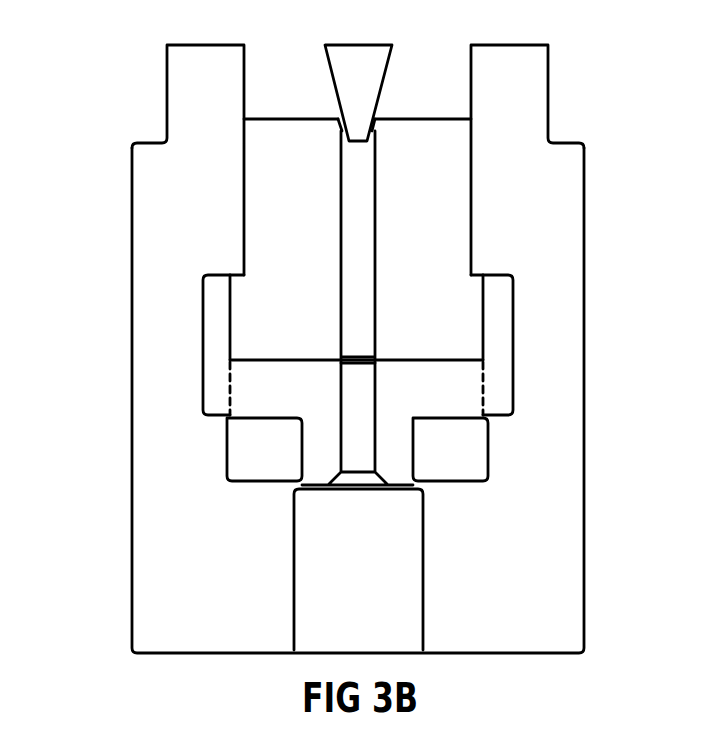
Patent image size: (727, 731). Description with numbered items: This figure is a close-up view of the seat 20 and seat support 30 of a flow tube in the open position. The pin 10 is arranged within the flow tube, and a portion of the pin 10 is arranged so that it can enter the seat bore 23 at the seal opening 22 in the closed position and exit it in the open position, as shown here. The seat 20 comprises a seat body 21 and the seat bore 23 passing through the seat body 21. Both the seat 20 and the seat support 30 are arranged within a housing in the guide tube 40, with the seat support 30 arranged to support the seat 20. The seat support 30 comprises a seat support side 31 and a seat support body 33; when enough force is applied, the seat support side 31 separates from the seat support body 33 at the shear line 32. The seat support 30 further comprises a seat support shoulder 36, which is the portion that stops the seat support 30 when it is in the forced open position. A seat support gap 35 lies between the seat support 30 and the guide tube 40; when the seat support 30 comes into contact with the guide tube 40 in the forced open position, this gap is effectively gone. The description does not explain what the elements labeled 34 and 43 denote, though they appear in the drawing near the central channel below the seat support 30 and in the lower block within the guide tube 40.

The pin 10 is at (327, 100).
The seat 20 is at (520, 210).
The seat body 21 is at (285, 223).
The seal opening 22 is at (382, 123).
The seat bore 23 is at (345, 278).
The seat support 30 is at (535, 347).
The seat support side 31 is at (220, 352).
The shear line 32 is at (490, 385).
The seat support body 33 is at (272, 383).
The outlet channel 34 is at (355, 423).
The seat support gap 35 is at (280, 428).
The seat support shoulder 36 is at (457, 420).
The guide tube 40 is at (543, 460).
The base block 43 is at (355, 517).